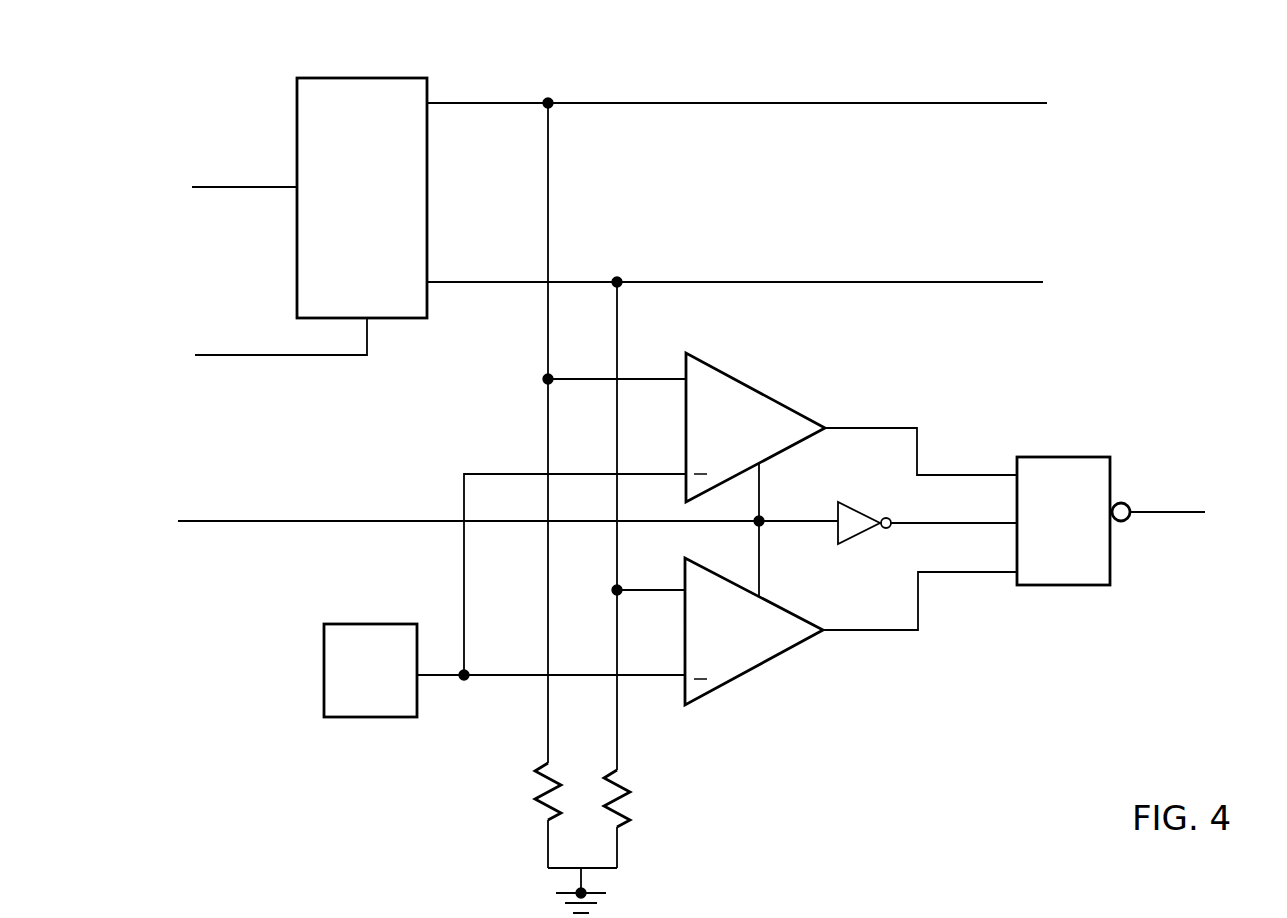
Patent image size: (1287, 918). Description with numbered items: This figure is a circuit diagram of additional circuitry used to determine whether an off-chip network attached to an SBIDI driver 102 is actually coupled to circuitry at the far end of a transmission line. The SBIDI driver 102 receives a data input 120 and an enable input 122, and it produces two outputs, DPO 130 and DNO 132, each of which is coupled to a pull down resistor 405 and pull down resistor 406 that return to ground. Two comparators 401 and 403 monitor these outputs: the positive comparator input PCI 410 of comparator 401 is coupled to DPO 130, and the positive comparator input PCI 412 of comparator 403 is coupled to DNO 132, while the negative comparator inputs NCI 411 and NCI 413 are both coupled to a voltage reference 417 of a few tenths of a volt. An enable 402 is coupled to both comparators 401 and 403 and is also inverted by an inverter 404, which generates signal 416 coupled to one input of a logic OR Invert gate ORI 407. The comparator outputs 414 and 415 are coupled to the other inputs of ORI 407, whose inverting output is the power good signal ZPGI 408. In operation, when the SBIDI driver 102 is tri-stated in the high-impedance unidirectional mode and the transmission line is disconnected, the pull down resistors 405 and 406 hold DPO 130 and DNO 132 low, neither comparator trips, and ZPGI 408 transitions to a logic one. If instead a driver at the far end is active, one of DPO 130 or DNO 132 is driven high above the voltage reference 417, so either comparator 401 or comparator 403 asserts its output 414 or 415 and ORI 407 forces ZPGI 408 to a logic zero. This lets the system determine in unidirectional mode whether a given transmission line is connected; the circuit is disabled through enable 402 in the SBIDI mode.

The SBIDI driver 102 is at (365, 78).
The data input line 120 is at (212, 143).
The enable input line 122 is at (203, 348).
The DPO 130 is at (987, 103).
The DNO 132 is at (977, 285).
The comparator 401 is at (765, 392).
The enable 402 is at (297, 490).
The comparator 403 is at (793, 648).
The inverter 404 is at (866, 500).
The pull down resistor 405 is at (523, 768).
The pull down resistor 406 is at (647, 775).
The logic OR Invert (ORI) 407 is at (1038, 457).
The power good signal ZPGI 408 is at (1158, 515).
The positive comparator input (PCI) 410 is at (700, 355).
The negative comparator input (NCI) 411 is at (707, 470).
The positive comparator input (PCI) 412 is at (700, 570).
The negative comparator input (NCI) 413 is at (695, 672).
The comparator output 414 is at (870, 423).
The comparator output 415 is at (957, 573).
The signal 416 is at (932, 522).
The voltage reference 417 is at (343, 633).